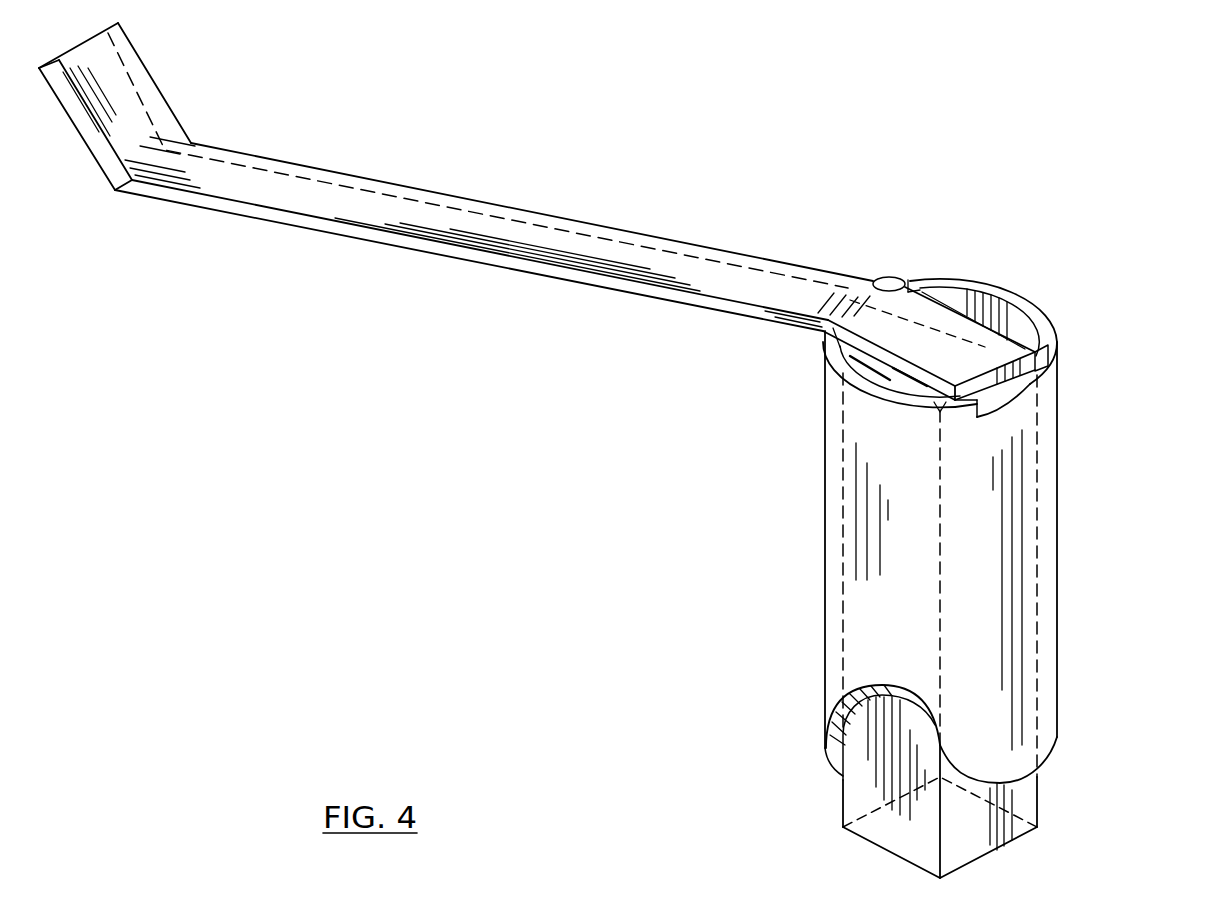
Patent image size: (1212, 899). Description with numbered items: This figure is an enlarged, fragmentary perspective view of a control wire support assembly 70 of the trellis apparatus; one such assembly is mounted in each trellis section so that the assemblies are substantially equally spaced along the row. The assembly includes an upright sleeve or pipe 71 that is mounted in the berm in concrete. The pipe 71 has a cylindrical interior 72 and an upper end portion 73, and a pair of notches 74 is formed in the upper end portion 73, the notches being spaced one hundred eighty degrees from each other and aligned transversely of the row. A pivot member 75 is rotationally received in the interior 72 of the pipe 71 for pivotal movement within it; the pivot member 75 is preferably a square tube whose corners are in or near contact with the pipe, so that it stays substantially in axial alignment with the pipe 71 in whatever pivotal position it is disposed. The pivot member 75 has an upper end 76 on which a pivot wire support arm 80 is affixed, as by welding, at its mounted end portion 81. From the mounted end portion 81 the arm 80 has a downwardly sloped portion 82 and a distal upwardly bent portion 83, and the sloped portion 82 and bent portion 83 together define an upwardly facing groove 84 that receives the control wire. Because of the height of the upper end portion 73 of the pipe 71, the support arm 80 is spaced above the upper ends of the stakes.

The control wire support assembly 70 is at (1060, 466).
The upright sleeve or pipe 71 is at (1045, 509).
The cylindrical interior 72 is at (1000, 304).
The upper end portion 73 is at (955, 278).
The notches 74 is at (875, 283).
The pivot member 75 is at (873, 507).
The upper end 76 is at (1043, 345).
The pivot wire support arm 80 is at (553, 210).
The mounted end portion 81 is at (941, 355).
The downwardly sloped portion 82 is at (340, 196).
The distal upwardly bent portion 83 is at (107, 53).
The upwardly facing groove 84 is at (162, 150).